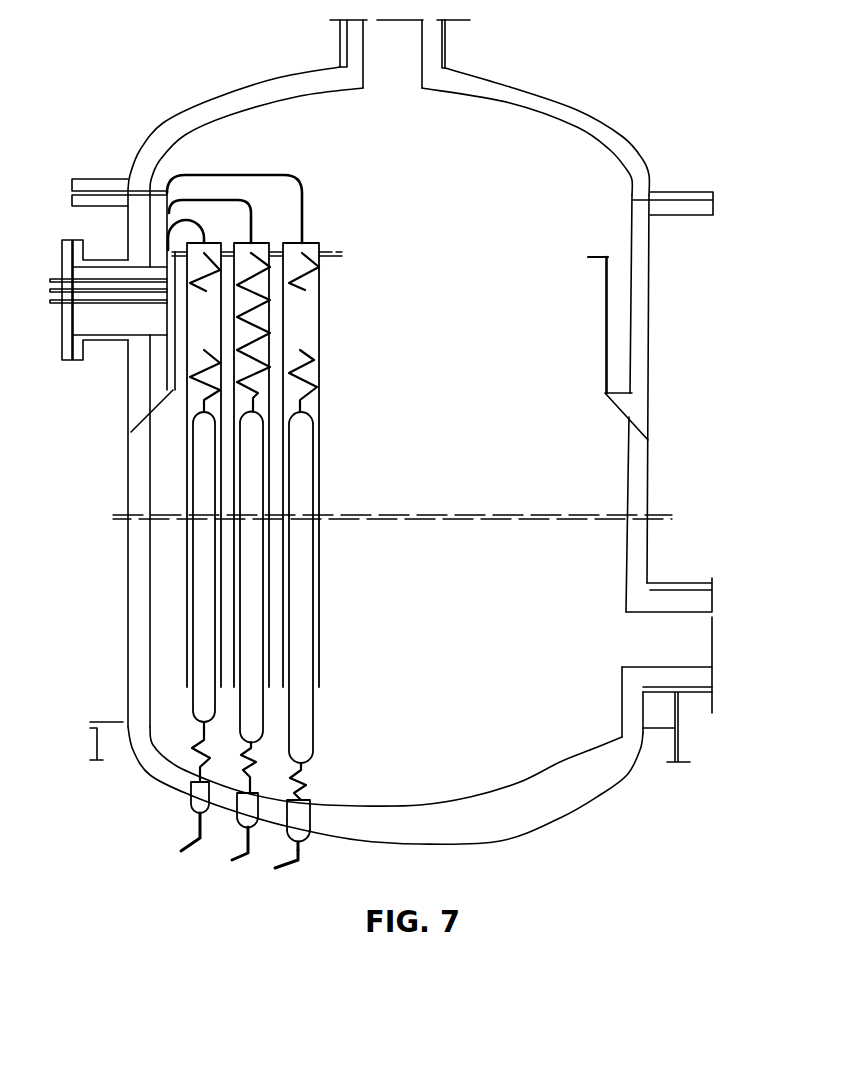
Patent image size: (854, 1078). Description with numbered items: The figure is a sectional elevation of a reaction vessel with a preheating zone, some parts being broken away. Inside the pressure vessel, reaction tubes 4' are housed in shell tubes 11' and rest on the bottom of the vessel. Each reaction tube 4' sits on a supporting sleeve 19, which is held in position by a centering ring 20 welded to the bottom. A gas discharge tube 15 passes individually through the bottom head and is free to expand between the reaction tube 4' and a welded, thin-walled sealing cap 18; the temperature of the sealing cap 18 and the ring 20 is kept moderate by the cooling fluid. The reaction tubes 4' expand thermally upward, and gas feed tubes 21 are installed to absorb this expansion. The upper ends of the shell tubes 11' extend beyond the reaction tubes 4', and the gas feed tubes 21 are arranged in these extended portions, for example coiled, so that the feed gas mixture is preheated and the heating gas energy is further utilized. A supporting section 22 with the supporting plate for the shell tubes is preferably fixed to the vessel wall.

The shell tube 11' is at (328, 465).
The reaction tube 4' is at (329, 587).
The gas feed tube 21 is at (303, 282).
The supporting section 22 is at (592, 260).
The supporting sleeve 19 is at (303, 777).
The centering ring 20 is at (310, 825).
The sealing cap 18 is at (303, 840).
The gas discharge tube 15 is at (290, 863).